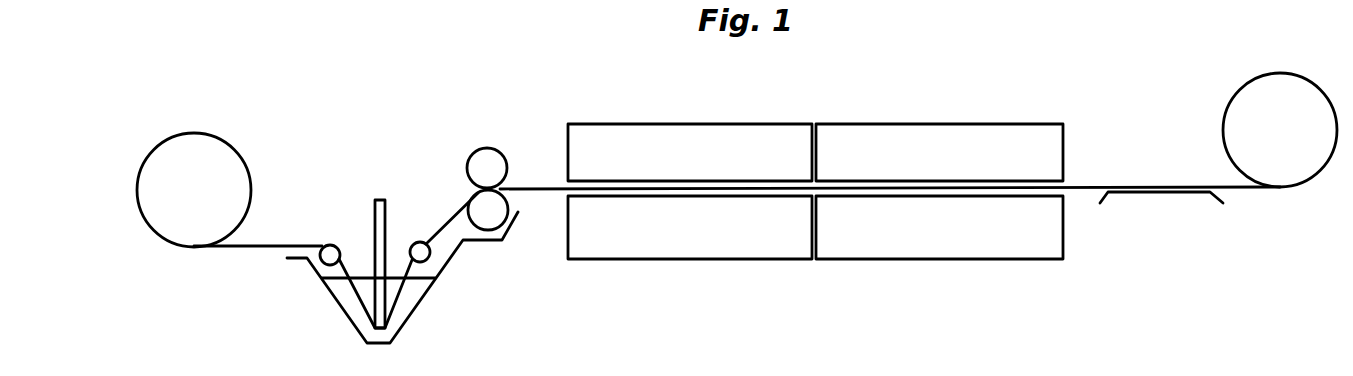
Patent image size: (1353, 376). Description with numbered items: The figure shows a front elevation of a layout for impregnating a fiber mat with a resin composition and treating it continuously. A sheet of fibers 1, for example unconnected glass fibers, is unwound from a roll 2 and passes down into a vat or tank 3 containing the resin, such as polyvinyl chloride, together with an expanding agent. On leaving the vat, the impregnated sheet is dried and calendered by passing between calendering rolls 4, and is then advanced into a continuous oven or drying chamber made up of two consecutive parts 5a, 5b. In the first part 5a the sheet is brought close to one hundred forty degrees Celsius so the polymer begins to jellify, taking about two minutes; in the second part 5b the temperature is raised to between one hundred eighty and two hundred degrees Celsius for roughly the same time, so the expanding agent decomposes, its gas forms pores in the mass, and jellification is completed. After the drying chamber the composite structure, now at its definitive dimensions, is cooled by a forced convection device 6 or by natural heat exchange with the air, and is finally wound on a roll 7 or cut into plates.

The sheet of fibers 1 is at (257, 250).
The roll 2 is at (237, 160).
The vat or tank 3 is at (353, 320).
The calendering rolls 4 is at (496, 201).
The first part of the oven 5a is at (705, 207).
The second part of the drying chamber 5b is at (927, 205).
The forced convection device 6 is at (1183, 192).
The roll 7 is at (1233, 104).